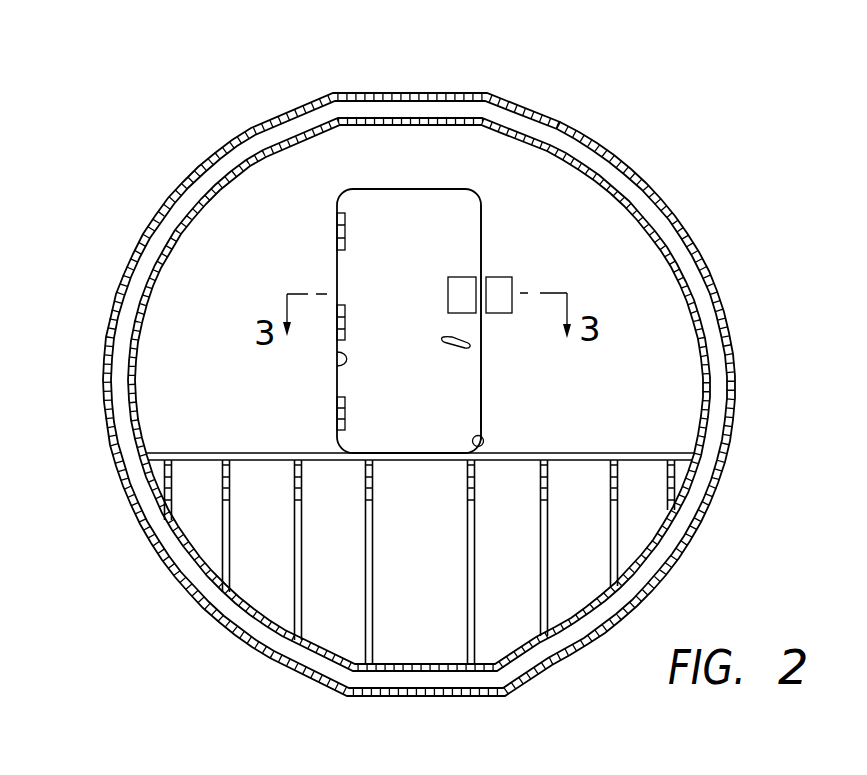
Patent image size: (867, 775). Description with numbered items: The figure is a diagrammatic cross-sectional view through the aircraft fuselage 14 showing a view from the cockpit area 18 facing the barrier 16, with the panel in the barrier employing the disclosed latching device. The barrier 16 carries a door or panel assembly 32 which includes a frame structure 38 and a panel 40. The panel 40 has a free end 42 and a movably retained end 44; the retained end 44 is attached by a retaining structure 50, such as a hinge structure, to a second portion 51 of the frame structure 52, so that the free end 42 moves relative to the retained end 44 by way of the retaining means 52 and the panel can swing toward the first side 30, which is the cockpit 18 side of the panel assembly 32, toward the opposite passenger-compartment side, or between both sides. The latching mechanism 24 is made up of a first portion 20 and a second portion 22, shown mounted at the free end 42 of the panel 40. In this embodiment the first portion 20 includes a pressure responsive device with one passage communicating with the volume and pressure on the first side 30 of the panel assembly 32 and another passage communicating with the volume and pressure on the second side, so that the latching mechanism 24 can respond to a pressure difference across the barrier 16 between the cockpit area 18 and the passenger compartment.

The fuselage 14 is at (112, 248).
The barrier 16 is at (598, 197).
The cockpit area 18 is at (165, 338).
The first side 30 is at (234, 336).
The panel assembly 32 is at (400, 178).
The panel 40 is at (447, 203).
The frame structure 38 is at (481, 206).
The retaining structure 50 is at (337, 232).
The retaining means 52 is at (337, 368).
The retained end 44 is at (337, 398).
The second portion 22 is at (463, 277).
The first portion 20 is at (497, 313).
The latching mechanism 24 is at (495, 340).
The free end 42 is at (483, 400).
The second portion of the frame structure 51 is at (484, 444).